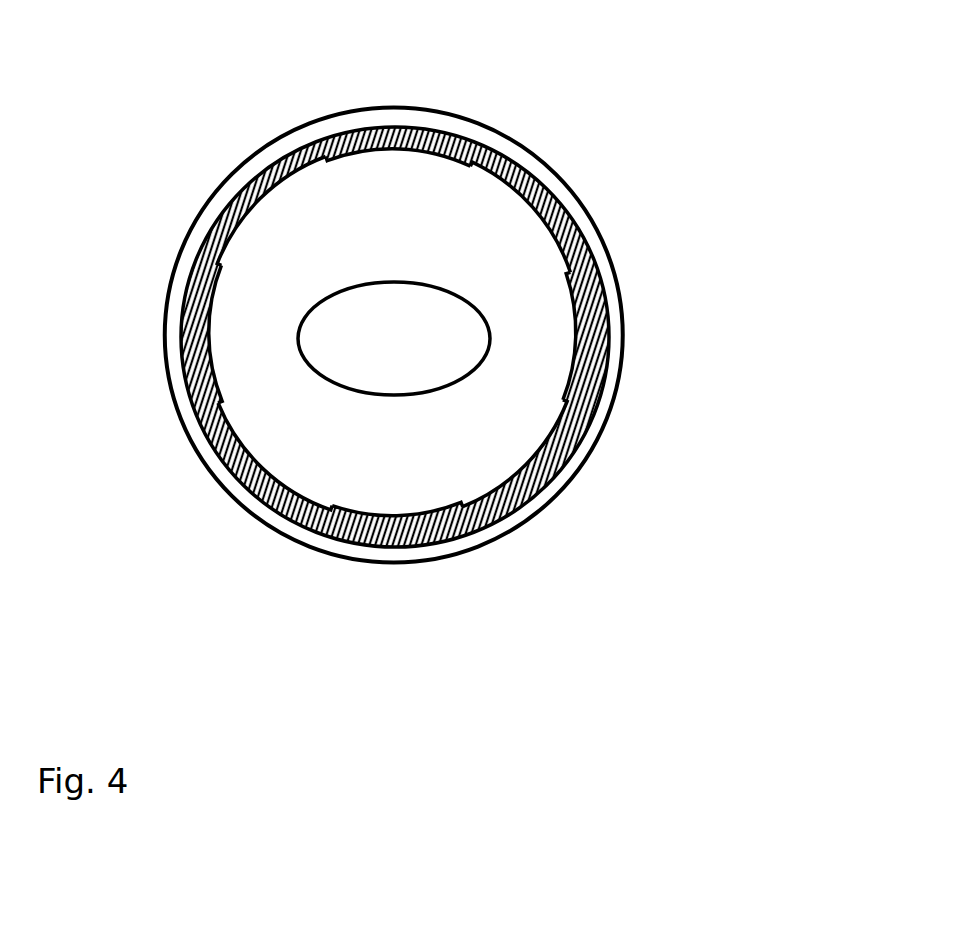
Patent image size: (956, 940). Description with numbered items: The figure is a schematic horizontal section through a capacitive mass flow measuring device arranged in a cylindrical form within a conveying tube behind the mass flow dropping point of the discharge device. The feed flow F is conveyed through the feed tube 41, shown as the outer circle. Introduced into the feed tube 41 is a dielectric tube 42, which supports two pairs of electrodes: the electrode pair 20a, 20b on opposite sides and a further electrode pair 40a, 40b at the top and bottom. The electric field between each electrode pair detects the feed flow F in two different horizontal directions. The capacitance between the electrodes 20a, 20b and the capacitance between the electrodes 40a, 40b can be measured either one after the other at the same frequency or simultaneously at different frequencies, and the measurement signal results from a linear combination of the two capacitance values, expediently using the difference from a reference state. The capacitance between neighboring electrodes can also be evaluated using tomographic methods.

The feed tube 41 is at (228, 185).
The dielectric tube 42 is at (190, 277).
The electrode 40a is at (459, 162).
The electrode 40b is at (465, 512).
The electrode 20a is at (213, 403).
The electrode 20b is at (578, 305).
The feed flow F is at (445, 321).